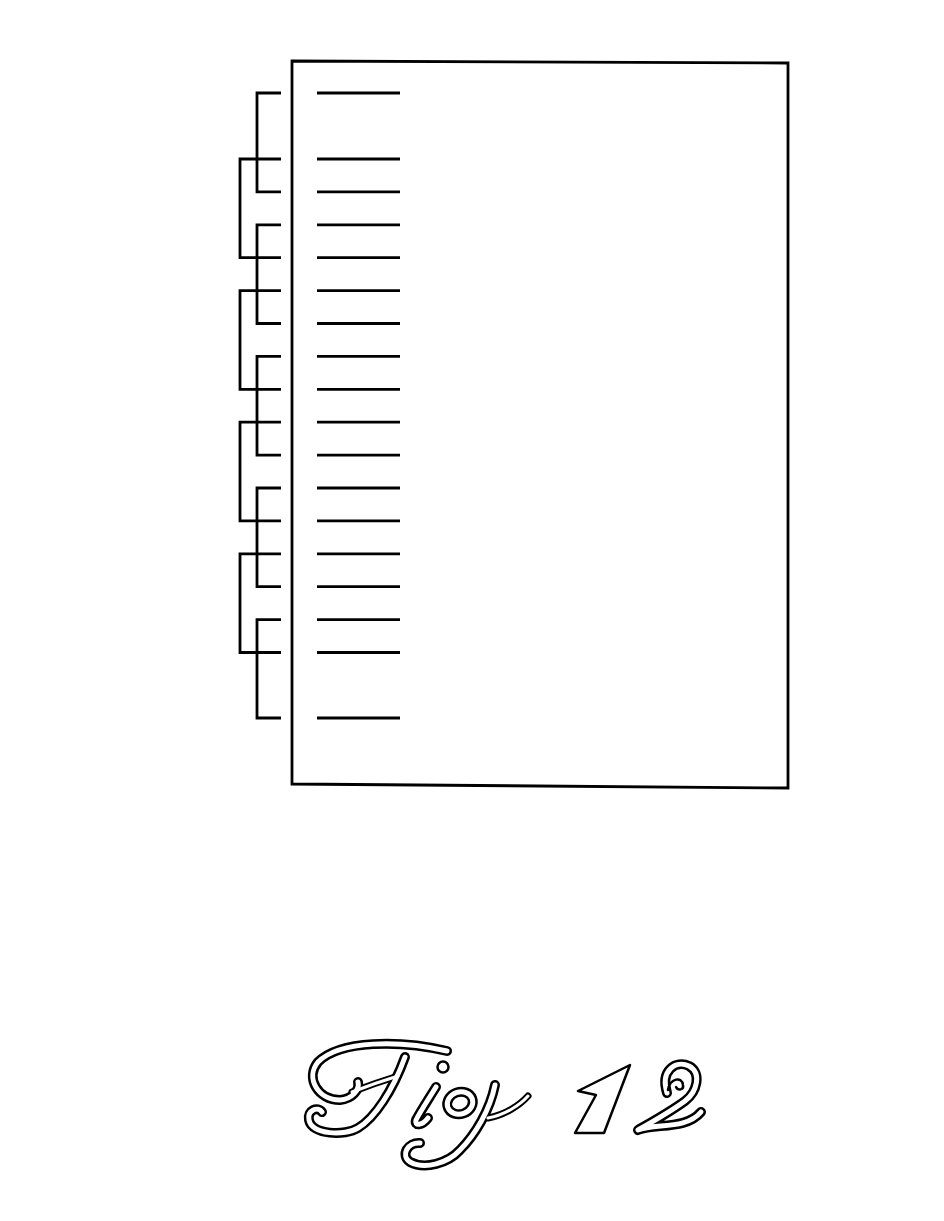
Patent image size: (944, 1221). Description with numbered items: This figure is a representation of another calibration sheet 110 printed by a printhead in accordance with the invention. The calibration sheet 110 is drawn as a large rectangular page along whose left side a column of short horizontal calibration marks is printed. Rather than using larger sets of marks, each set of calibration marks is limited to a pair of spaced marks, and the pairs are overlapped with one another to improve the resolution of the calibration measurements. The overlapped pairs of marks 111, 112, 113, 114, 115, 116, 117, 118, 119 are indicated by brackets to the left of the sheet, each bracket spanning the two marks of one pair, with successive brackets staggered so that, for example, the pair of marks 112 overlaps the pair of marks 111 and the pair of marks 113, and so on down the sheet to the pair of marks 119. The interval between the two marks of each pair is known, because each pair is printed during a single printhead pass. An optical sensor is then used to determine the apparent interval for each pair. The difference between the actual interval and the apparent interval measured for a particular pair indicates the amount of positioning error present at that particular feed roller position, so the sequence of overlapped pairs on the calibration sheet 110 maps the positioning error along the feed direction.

The calibration sheet 110 is at (610, 80).
The pair of marks 111 is at (252, 131).
The pair of marks 112 is at (240, 207).
The pair of marks 113 is at (257, 271).
The pair of marks 114 is at (240, 340).
The pair of marks 115 is at (255, 405).
The pair of marks 116 is at (240, 467).
The pair of marks 117 is at (255, 533).
The pair of marks 118 is at (240, 605).
The pair of marks 119 is at (255, 675).